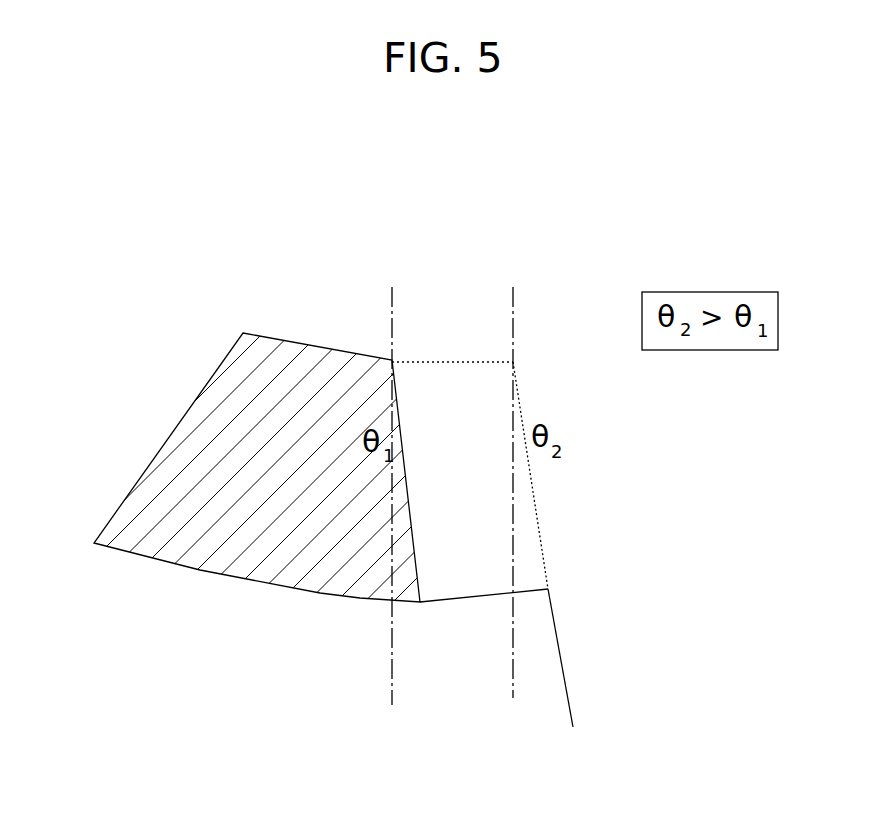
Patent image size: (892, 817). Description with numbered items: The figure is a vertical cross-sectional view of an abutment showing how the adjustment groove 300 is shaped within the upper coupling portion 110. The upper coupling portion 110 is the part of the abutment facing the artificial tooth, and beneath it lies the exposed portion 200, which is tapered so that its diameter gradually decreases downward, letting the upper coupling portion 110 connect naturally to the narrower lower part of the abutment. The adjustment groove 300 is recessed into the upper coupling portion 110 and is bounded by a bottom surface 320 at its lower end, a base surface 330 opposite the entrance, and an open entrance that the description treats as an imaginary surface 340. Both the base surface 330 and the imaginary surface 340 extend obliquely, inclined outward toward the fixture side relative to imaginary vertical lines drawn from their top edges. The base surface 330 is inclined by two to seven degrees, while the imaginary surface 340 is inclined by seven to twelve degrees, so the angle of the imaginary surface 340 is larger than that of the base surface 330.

The upper coupling portion 110 is at (268, 540).
The exposed portion 200 is at (543, 663).
The adjustment groove 300 is at (442, 555).
The bottom surface 320 is at (458, 605).
The base surface 330 is at (413, 537).
The imaginary surface 340 is at (537, 505).